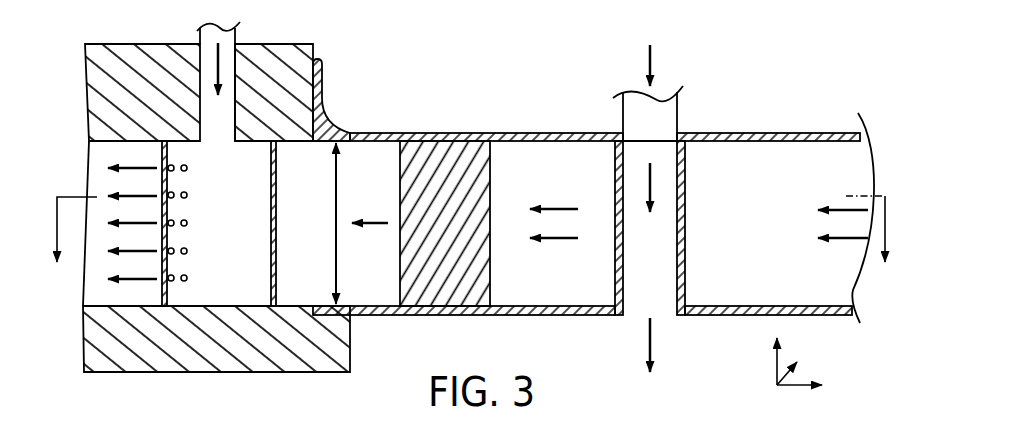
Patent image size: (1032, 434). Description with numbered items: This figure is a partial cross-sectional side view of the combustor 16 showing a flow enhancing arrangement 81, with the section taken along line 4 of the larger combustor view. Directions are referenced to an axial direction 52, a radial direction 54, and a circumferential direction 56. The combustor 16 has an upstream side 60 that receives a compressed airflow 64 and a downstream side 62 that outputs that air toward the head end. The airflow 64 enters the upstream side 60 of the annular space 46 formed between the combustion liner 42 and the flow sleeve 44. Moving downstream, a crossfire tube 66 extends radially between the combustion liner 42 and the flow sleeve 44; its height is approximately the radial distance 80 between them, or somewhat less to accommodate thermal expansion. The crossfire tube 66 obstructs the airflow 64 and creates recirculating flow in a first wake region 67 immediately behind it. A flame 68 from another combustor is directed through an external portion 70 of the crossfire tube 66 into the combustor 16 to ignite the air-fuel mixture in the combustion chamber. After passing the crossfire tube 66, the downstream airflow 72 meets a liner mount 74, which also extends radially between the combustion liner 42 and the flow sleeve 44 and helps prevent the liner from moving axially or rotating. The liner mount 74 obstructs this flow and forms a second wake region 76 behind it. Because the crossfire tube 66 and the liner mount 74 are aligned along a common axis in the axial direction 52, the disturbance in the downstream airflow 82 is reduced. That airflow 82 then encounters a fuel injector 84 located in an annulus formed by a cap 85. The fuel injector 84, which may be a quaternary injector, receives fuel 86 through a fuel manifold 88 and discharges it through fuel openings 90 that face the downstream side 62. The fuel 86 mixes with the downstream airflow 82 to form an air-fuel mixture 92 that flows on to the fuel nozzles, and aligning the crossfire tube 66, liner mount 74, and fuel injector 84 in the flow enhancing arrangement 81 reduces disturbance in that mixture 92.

The section line 4- 4 is at (472, 247).
The combustor 16 is at (822, 70).
The combustion liner 42 is at (357, 318).
The flow sleeve 44 is at (356, 133).
The annular space 46 is at (378, 155).
The axial direction 52 is at (787, 386).
The radial direction 54 is at (776, 375).
The circumferential direction 56 is at (796, 378).
The upstream side 60 is at (868, 322).
The downstream side 62 is at (63, 308).
The compressed airflow 64 is at (843, 240).
The crossfire tube 66 is at (614, 228).
The first wake region 67 is at (612, 245).
The flame 68 is at (650, 62).
The external portion of the crossfire tube 70 is at (680, 110).
The downstream airflow 72 is at (553, 240).
The liner mount 74 is at (492, 157).
The second wake region 76 is at (390, 245).
The radial distance 80 is at (336, 226).
The flow enhancing arrangement 81 is at (548, 107).
The downstream airflow 82 is at (385, 223).
The fuel injector 84 is at (277, 224).
The cap 85 is at (125, 44).
The fuel 86 is at (218, 85).
The fuel manifold 88 is at (240, 117).
The fuel openings 90 is at (190, 222).
The air-fuel mixture 92 is at (138, 163).